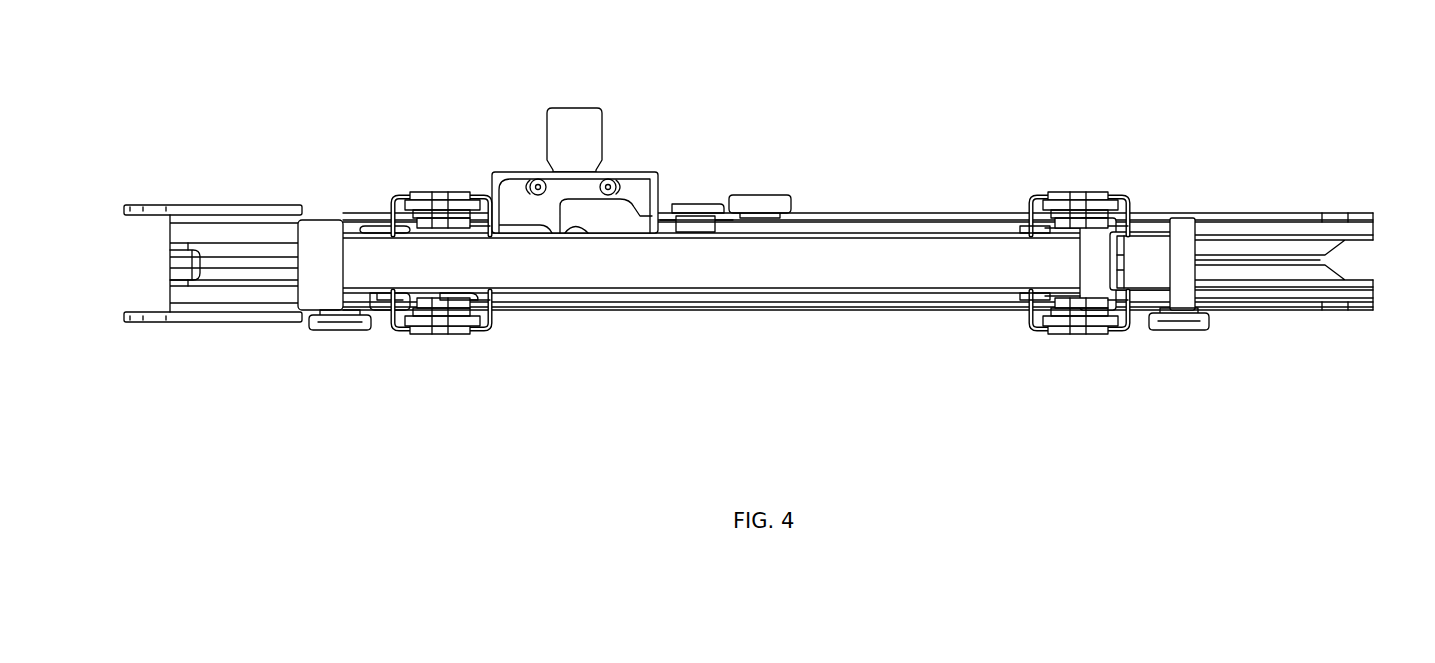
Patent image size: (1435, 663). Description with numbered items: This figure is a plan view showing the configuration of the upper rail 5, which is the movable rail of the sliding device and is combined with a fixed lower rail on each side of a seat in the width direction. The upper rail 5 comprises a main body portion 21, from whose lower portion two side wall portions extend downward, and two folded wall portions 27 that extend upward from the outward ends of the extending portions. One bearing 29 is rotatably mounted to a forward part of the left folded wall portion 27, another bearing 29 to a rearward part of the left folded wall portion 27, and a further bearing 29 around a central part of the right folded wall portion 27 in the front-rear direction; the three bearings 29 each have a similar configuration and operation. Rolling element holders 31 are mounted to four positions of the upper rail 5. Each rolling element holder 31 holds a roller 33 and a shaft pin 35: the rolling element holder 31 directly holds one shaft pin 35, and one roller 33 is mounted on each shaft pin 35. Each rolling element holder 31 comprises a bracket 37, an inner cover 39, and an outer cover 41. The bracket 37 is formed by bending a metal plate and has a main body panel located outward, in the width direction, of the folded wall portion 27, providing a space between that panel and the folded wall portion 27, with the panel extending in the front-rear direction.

The upper rail 5 is at (1352, 176).
The main body portion 21 is at (845, 253).
The folded wall portion 27 is at (693, 312).
The bearing 29 is at (762, 200).
The rolling element holder 31 is at (392, 205).
The roller 33 is at (410, 210).
The shaft pin 35 is at (428, 200).
The bracket 37 is at (483, 200).
The inner cover 39 is at (462, 298).
The outer cover 41 is at (455, 198).